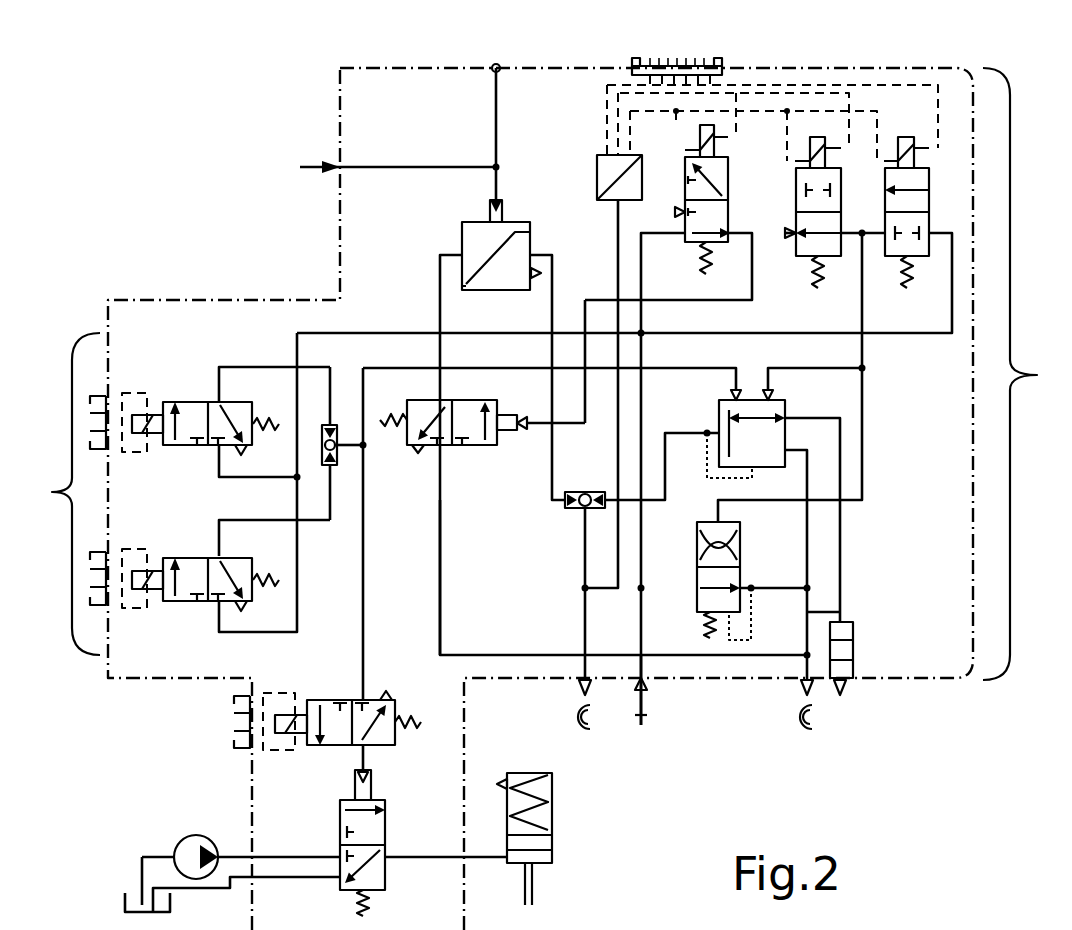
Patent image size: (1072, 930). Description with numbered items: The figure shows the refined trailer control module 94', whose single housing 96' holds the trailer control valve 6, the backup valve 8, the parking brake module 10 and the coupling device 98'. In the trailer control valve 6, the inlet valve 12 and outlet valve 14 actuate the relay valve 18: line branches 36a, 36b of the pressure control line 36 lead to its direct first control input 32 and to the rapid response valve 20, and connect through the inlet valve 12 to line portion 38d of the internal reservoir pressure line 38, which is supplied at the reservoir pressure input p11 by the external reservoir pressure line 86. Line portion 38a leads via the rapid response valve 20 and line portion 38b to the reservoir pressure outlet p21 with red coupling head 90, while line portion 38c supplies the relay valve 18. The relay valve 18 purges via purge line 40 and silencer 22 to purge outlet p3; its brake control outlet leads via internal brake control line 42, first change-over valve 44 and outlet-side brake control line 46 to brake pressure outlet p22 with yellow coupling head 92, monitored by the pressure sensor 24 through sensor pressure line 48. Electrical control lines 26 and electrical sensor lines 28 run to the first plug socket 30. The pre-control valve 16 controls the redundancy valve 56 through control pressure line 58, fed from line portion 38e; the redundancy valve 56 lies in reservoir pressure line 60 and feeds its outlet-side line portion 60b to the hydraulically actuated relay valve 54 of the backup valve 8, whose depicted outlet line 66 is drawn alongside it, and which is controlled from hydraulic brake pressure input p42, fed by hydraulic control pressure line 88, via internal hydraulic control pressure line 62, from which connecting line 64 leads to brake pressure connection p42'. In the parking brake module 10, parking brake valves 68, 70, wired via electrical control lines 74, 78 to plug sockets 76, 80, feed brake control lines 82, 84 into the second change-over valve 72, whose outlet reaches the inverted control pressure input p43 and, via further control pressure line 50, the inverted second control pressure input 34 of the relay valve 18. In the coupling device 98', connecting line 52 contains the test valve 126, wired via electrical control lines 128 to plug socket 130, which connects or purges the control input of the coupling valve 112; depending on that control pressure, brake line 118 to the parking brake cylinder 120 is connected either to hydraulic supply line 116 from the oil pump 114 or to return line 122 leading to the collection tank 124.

The trailer control valve 6 is at (1019, 374).
The backup valve 8 is at (310, 261).
The parking brake module 10 is at (57, 494).
The inlet valve 12 is at (930, 205).
The outlet valve 14 is at (795, 200).
The pre-control valve 16 is at (730, 180).
The relay valve 18 is at (715, 418).
The rapid response valve 20 is at (695, 575).
The silencer 22 is at (855, 656).
The electropneumatic pressure sensor 24 is at (596, 178).
The electrical control lines 26 is at (906, 78).
The electrical sensor lines 28 is at (592, 120).
The first plug socket 30 is at (722, 60).
The direct first control input 32 is at (773, 395).
The inverted second control pressure input 34 is at (738, 392).
The pressure control line 36 is at (865, 300).
The line branch 36a is at (822, 367).
The line branch 36b is at (865, 433).
The internal reservoir pressure line 38 is at (643, 614).
The branching line portion 38a is at (776, 588).
The outlet-side line portion 38b is at (810, 612).
The further line portion 38c is at (810, 528).
The line portion 38d is at (712, 333).
The line portion 38e is at (645, 293).
The purge line 40 is at (842, 560).
The internal brake control line 42 is at (666, 455).
The first change-over valve 44 is at (585, 490).
The outlet-side brake control line 46 is at (584, 540).
The sensor pressure line 48 is at (617, 236).
The further control pressure line 50 is at (407, 365).
The connecting line 52 is at (365, 575).
The hydraulically actuated relay valve 54 is at (460, 242).
The redundancy valve 56 is at (475, 448).
The control pressure line 58 is at (753, 293).
The reservoir pressure line 60 is at (442, 568).
The outlet-side line portion 60b is at (442, 308).
The internal hydraulic control pressure line 62 is at (392, 165).
The connecting line 64 is at (494, 113).
The pneumatic line 66 is at (553, 280).
The parking brake valve 68 is at (196, 400).
The parking brake valve 70 is at (192, 556).
The second change-over valve 72 is at (340, 458).
The electrical control lines 74 is at (132, 380).
The second plug socket 76 is at (98, 396).
The electrical control lines 78 is at (132, 536).
The third plug socket 80 is at (98, 552).
The brake control line 82 is at (260, 365).
The brake control line 84 is at (313, 525).
The external reservoir pressure line 86 is at (645, 715).
The hydraulic control pressure line 88 is at (310, 172).
The reservoir coupling head 90 is at (812, 731).
The brake coupling head 92 is at (590, 731).
The trailer control module 94' is at (149, 136).
The housing 96' is at (204, 264).
The coupling device 98' is at (165, 766).
The coupling valve 112 is at (386, 870).
The oil pump 114 is at (193, 848).
The hydraulic supply line 116 is at (298, 855).
The brake line 118 is at (424, 855).
The parking brake cylinder 120 is at (553, 810).
The return line 122 is at (296, 878).
The collection tank 124 is at (123, 905).
The test valve 126 is at (322, 698).
The electrical control lines 128 is at (276, 682).
The plug socket 130 is at (232, 720).
The brake pressure connection p42' is at (501, 55).
The hydraulic brake pressure input p42 is at (320, 153).
The inverted control pressure input p43 is at (372, 453).
The brake pressure outlet p22 is at (564, 679).
The reservoir pressure input p11 is at (661, 690).
The reservoir pressure outlet p21 is at (789, 645).
The purge outlet p3 is at (854, 691).